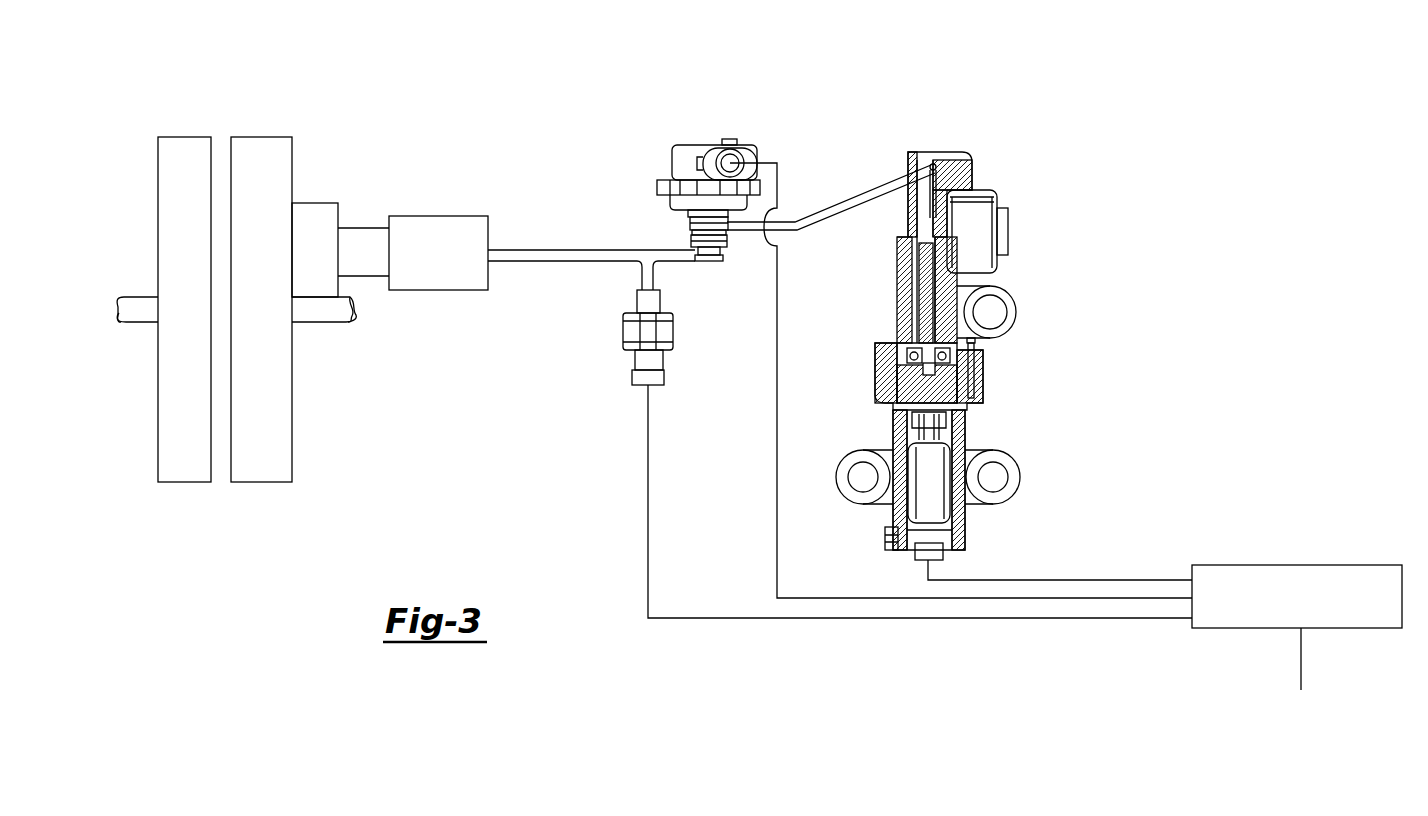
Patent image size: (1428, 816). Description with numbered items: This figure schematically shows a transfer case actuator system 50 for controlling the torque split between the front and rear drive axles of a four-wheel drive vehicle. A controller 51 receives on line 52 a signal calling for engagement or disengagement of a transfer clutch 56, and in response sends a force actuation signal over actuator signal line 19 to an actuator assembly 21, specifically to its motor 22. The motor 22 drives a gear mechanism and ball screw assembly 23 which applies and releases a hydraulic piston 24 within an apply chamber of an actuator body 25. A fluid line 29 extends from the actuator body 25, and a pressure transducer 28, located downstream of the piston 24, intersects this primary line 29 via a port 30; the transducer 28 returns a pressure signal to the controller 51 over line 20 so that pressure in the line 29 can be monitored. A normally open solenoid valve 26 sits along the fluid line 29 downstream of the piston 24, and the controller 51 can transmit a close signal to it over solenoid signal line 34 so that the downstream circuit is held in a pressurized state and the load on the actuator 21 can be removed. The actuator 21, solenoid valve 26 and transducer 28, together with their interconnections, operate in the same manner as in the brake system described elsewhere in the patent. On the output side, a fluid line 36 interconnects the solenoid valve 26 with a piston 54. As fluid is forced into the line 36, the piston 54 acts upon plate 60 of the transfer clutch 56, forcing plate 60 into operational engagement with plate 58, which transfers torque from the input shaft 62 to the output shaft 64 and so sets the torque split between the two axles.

The actuator signal line 19 is at (1113, 580).
The line 20 is at (648, 488).
The actuator assembly 21 is at (905, 351).
The motor 22 is at (974, 514).
The gear mechanism and ball screw assembly 23 is at (917, 313).
The hydraulic piston 24 is at (918, 243).
The actuator body 25 is at (965, 172).
The solenoid valve 26 is at (664, 146).
The pressure transducer 28 is at (632, 328).
The fluid line 29 is at (861, 194).
The port 30 is at (637, 267).
The solenoid signal line 34 is at (777, 340).
The fluid line 36 is at (553, 250).
The transfer case actuator system 50 is at (1170, 250).
The controller 51 is at (1330, 565).
The line 52 is at (1302, 663).
The piston 54 is at (357, 228).
The transfer clutch 56 is at (152, 223).
The plate 58 is at (182, 137).
The plate 60 is at (258, 137).
The input shaft 62 is at (142, 297).
The output shaft 64 is at (332, 323).